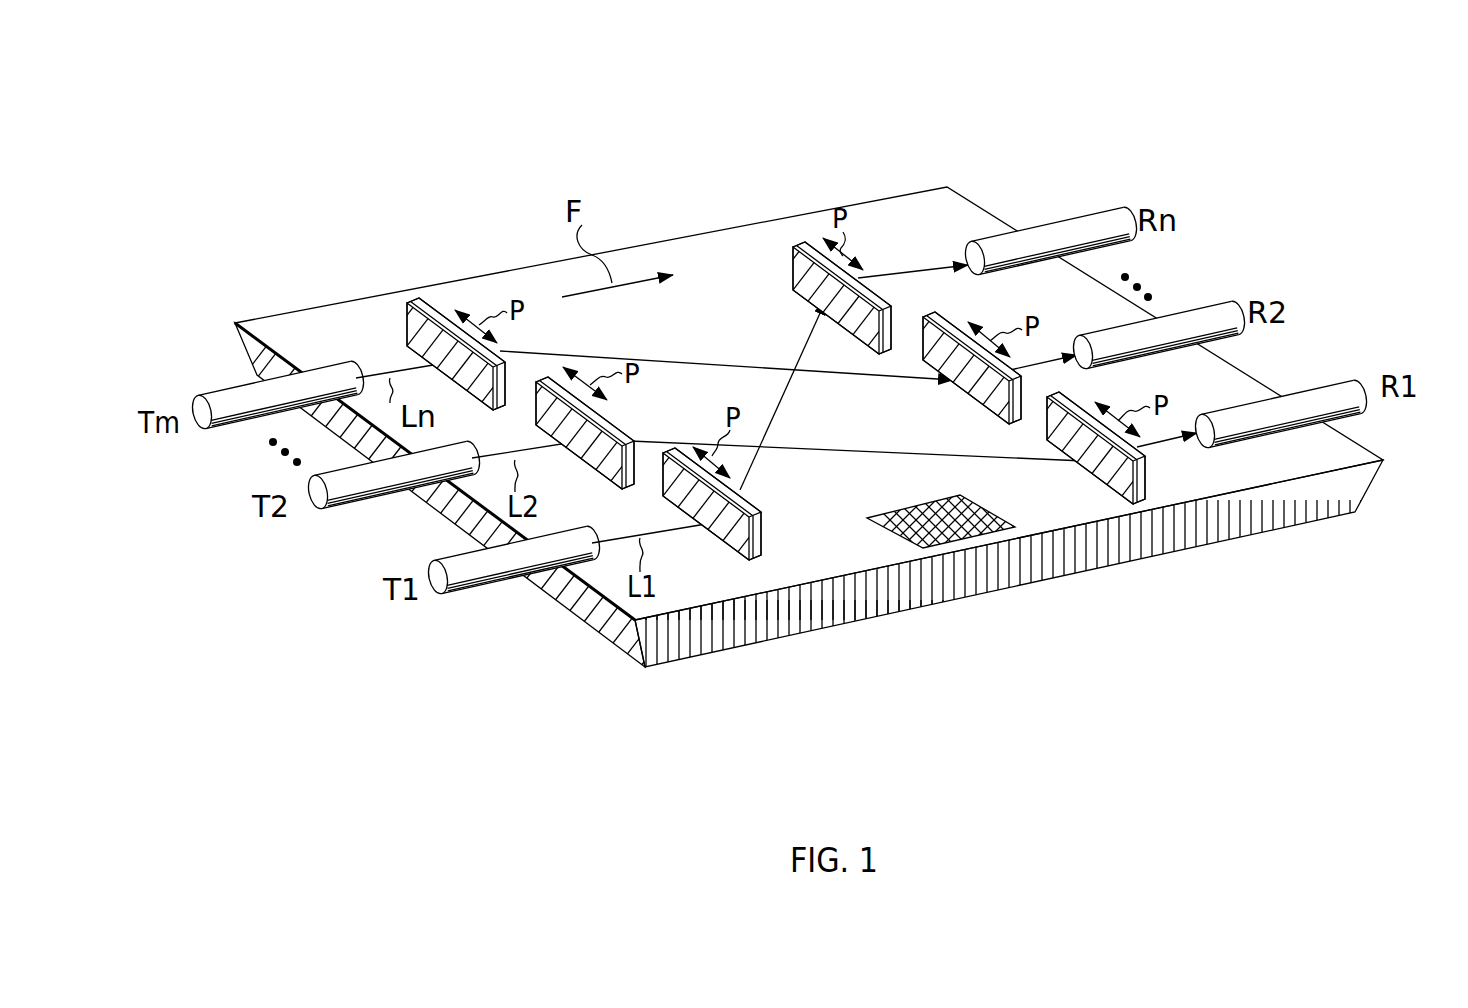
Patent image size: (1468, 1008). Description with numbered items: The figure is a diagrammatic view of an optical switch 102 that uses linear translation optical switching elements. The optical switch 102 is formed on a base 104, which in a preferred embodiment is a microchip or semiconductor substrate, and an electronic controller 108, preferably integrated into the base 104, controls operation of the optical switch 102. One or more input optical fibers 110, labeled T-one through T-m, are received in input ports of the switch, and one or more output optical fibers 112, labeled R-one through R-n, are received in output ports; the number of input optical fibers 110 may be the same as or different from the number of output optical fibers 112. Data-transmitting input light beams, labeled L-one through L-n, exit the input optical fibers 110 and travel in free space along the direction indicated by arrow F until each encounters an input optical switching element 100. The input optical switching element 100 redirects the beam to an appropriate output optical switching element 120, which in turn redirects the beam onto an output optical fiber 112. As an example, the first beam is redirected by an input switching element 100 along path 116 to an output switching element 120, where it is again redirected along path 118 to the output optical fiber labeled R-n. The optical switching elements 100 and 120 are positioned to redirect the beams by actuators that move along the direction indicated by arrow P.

The input optical switching element 100 is at (420, 307).
The optical switch 102 is at (675, 235).
The base 104 is at (807, 565).
The electronic controller 108 is at (963, 530).
The input optical fibers 110 is at (210, 383).
The output optical fibers 112 is at (1100, 213).
The path 116 is at (787, 383).
The path 118 is at (910, 267).
The output optical switching element 120 is at (787, 293).